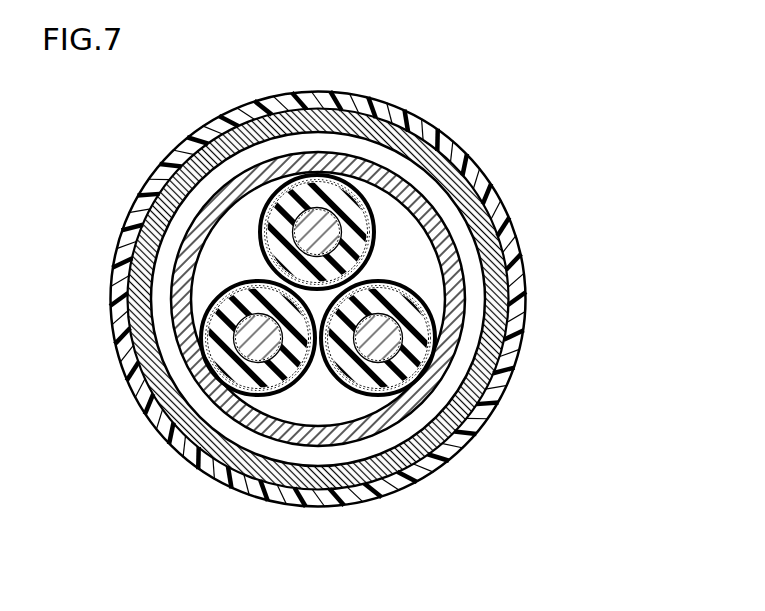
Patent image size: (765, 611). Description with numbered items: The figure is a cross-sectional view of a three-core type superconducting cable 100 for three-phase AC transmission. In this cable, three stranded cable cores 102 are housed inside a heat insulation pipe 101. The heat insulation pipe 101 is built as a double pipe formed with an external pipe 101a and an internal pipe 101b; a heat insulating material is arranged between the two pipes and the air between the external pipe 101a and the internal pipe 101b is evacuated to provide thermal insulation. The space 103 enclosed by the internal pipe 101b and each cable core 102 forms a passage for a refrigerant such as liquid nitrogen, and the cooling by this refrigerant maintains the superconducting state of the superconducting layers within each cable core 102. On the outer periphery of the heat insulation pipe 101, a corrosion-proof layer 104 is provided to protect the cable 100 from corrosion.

The superconducting cable 100 is at (401, 330).
The heat insulation pipe 101 is at (410, 280).
The external pipe 101a is at (398, 296).
The internal pipe 101b is at (376, 280).
The cable core 102 is at (478, 543).
The space 103 is at (390, 299).
The corrosion-proof layer 104 is at (353, 299).